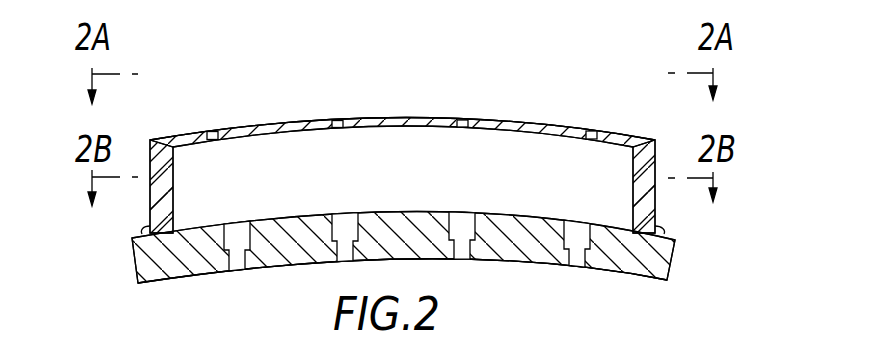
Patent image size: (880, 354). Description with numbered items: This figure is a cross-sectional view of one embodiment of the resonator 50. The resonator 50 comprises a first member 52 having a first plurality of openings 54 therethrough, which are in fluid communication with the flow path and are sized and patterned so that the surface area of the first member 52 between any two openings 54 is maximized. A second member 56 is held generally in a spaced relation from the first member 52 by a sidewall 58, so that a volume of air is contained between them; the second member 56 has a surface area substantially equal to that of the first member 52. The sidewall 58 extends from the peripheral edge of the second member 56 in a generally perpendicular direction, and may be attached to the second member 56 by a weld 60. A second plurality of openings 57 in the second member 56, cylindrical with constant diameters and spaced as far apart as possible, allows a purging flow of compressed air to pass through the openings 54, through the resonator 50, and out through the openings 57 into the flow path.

The resonator 50 is at (236, 98).
The first member 52 is at (538, 120).
The first plurality of openings 54 is at (340, 129).
The second member 56 is at (400, 120).
The second plurality of openings 57 is at (236, 261).
The sidewall 58 is at (652, 170).
The weld 60 is at (142, 231).